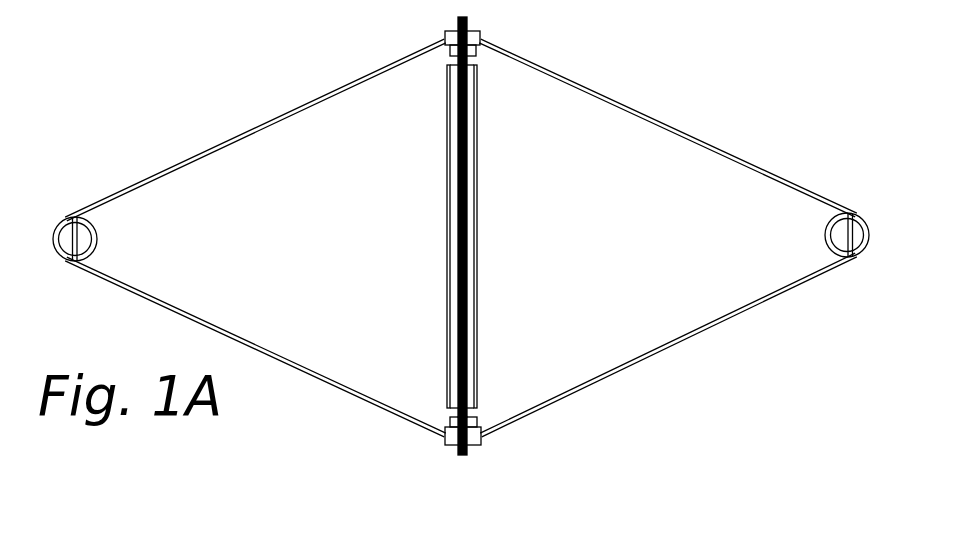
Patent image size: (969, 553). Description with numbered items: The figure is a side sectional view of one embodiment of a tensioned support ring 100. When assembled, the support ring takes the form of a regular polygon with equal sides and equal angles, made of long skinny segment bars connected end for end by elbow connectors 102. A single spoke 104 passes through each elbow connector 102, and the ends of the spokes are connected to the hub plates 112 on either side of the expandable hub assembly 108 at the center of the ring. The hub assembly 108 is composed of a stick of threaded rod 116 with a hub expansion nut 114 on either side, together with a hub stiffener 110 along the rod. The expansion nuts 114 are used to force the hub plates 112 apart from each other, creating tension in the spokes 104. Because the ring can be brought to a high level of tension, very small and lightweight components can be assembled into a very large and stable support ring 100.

The support ring 100 is at (678, 397).
The elbow connector 102 is at (55, 232).
The spoke 104 is at (170, 168).
The expandable hub assembly 108 is at (510, 246).
The hub stiffener 110 is at (447, 208).
The hub plate 112 is at (482, 440).
The hub expansion nut 114 is at (449, 428).
The threaded rod 116 is at (459, 460).